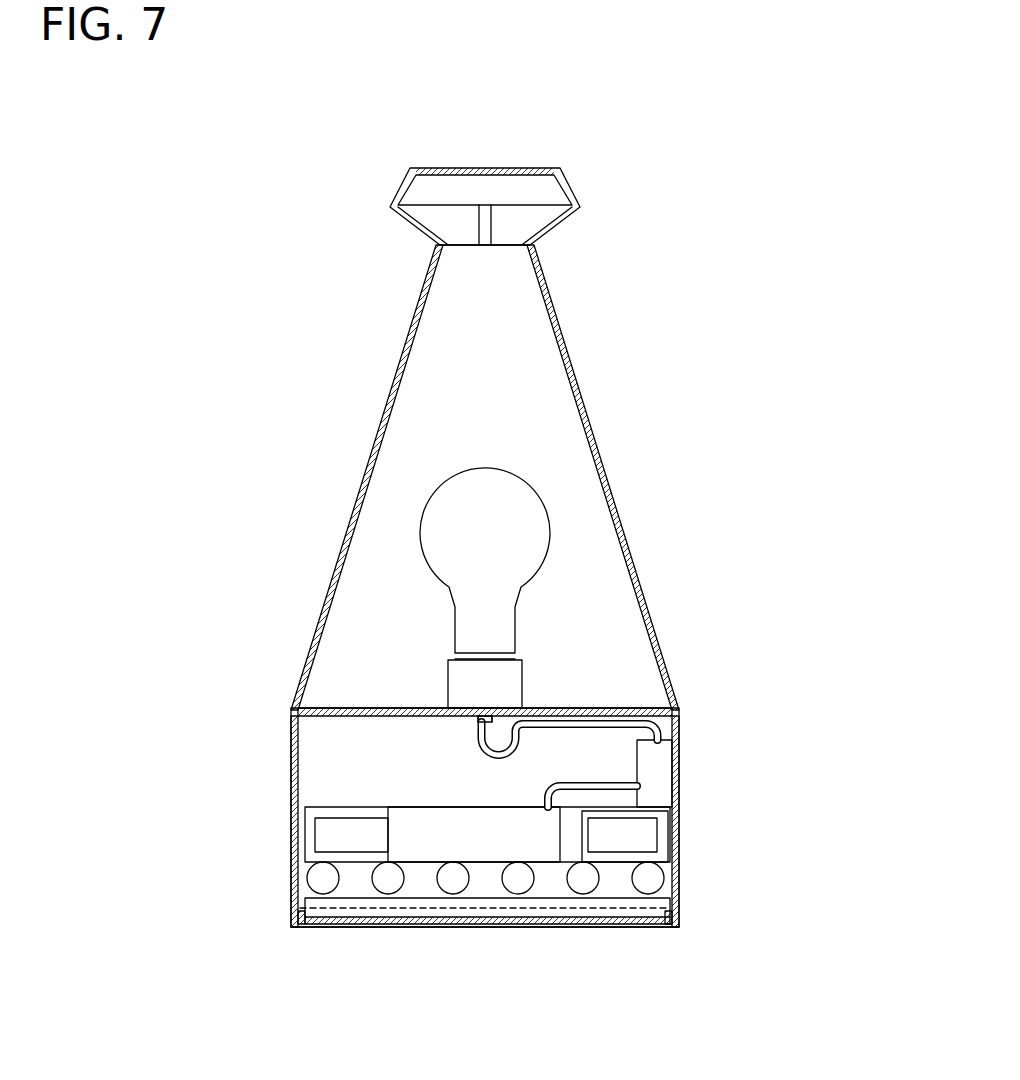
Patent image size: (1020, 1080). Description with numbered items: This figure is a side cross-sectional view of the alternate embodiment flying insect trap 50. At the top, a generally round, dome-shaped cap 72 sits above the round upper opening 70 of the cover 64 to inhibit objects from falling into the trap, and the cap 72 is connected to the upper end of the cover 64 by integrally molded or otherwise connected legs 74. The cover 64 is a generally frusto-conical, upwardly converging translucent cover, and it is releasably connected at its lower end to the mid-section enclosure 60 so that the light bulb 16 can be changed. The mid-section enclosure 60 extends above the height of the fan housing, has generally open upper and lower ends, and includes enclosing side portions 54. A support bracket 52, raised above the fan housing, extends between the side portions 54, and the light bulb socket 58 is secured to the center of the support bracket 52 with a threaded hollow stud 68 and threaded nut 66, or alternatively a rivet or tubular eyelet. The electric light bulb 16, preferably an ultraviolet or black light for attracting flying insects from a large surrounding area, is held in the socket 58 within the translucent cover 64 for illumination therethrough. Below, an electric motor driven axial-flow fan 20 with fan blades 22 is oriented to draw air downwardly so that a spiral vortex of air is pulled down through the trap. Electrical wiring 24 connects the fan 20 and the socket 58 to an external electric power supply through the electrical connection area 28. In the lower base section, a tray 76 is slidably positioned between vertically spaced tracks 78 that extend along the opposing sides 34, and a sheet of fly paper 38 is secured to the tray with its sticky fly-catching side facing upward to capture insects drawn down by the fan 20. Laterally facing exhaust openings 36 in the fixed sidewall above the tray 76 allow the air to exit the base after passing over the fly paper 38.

The electric light bulb 16 is at (421, 532).
The electric motor driven axial-flow fan 20 is at (305, 828).
The fan blades 22 is at (313, 820).
The electrical wiring 24 is at (612, 782).
The electrical connection area 28 is at (657, 765).
The sides 34 is at (298, 855).
The exhaust openings 36 is at (300, 895).
The fly paper 38 is at (652, 902).
The flying insect trap 50 is at (800, 356).
The support bracket 52 is at (538, 710).
The side portions 54 is at (682, 793).
The light bulb socket 58 is at (522, 676).
The mid-section enclosure 60 is at (272, 726).
The cover 64 is at (588, 412).
The threaded nut 66 is at (477, 722).
The threaded hollow stud 68 is at (465, 718).
The upper opening 70 is at (503, 245).
The cap 72 is at (397, 193).
The legs 74 is at (563, 222).
The tray 76 is at (656, 936).
The tracks 78 is at (292, 928).